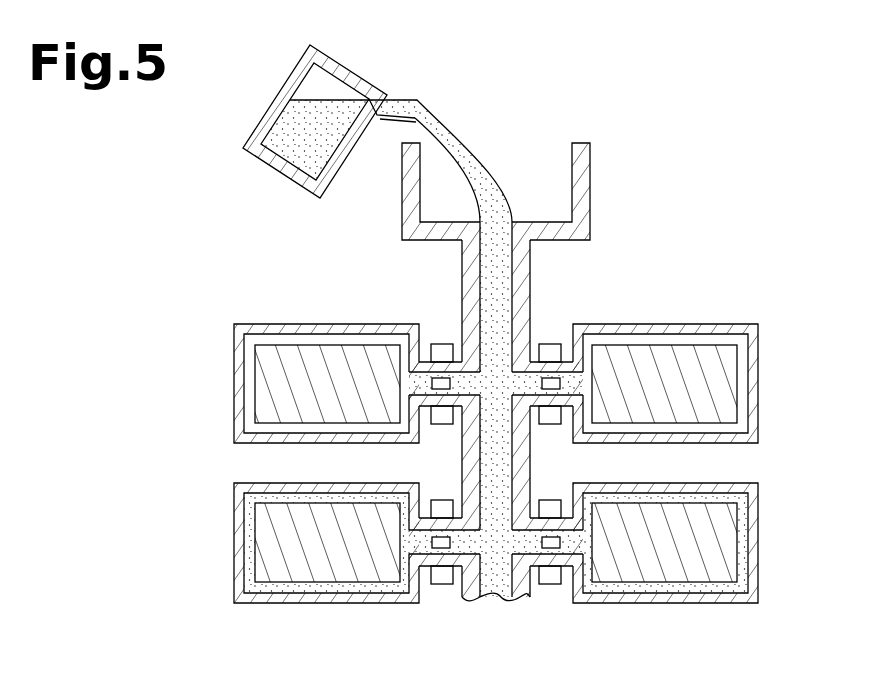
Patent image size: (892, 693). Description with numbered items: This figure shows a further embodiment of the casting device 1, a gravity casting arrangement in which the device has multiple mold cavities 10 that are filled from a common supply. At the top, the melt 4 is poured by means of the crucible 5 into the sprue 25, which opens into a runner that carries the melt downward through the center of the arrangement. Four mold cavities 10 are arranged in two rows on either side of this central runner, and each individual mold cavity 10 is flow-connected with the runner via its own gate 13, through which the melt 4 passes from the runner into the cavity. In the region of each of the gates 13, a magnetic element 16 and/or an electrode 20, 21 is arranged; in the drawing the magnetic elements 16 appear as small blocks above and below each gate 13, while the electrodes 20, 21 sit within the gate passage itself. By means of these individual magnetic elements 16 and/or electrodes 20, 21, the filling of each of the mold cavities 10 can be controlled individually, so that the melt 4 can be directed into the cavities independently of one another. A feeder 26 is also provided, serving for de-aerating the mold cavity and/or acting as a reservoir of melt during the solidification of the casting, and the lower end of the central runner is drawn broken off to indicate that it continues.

The casting device 1 is at (711, 77).
The melt 4 is at (308, 138).
The crucible 5 is at (275, 115).
The mold cavity 10 is at (268, 389).
The gate 13 is at (424, 299).
The magnetic element 16 is at (426, 324).
The electrode 20 is at (470, 433).
The electrode 21 is at (440, 383).
The sprue 25 is at (558, 180).
The feeder 26 is at (497, 543).